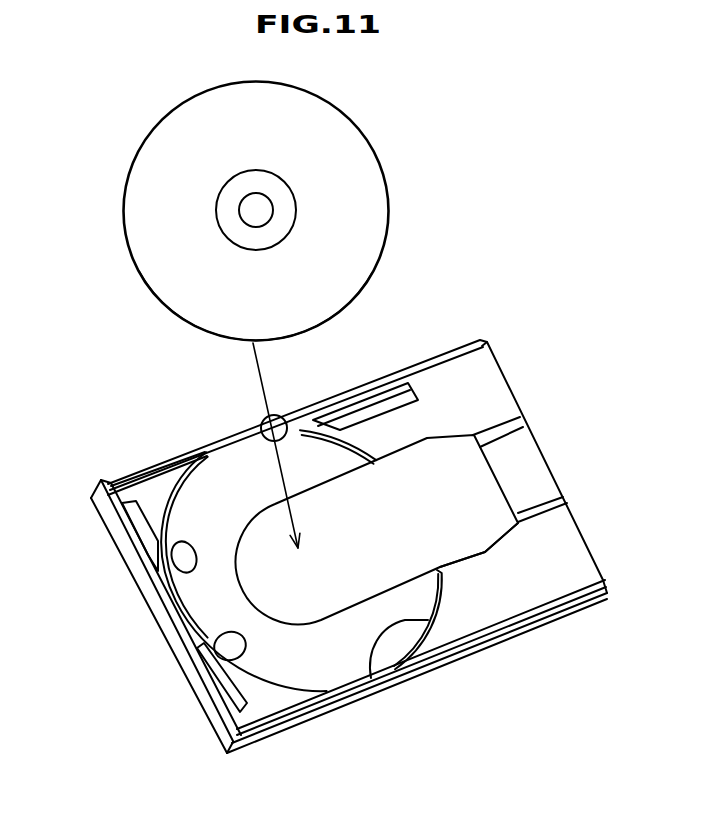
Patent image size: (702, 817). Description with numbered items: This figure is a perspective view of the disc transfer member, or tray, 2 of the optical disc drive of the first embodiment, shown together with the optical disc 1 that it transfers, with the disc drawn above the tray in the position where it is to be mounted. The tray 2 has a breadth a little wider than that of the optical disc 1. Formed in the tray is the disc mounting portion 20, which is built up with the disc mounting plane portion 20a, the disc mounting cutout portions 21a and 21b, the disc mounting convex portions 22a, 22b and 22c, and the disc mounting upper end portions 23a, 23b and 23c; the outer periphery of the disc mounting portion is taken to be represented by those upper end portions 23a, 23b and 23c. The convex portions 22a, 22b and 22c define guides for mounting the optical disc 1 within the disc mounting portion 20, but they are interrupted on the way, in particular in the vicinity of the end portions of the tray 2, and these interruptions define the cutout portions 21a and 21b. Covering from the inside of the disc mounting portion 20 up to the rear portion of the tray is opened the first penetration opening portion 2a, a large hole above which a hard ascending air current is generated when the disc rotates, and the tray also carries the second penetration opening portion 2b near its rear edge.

The optical disc 1 is at (158, 248).
The disc transfer member 2 is at (147, 490).
The first penetration opening portion 2a is at (444, 465).
The second penetration opening portion 2b is at (402, 400).
The disc mounting portion 20 is at (312, 662).
The disc mounting plane portion 20a is at (207, 608).
The disc mounting cutout portion 21a is at (237, 452).
The disc mounting cutout portion 21b is at (360, 677).
The disc mounting convex portion 22a is at (262, 422).
The disc mounting convex portion 22b is at (371, 678).
The disc mounting convex portion 22c is at (212, 463).
The disc mounting upper end portion 23a is at (309, 408).
The disc mounting upper end portion 23b is at (440, 600).
The disc mounting upper end portion 23c is at (162, 483).